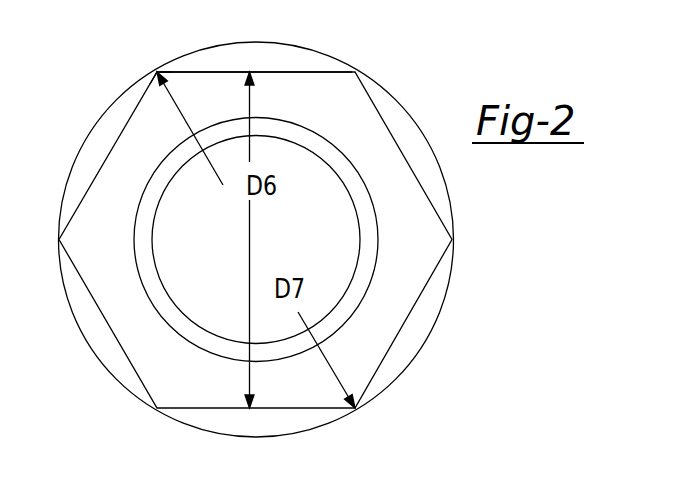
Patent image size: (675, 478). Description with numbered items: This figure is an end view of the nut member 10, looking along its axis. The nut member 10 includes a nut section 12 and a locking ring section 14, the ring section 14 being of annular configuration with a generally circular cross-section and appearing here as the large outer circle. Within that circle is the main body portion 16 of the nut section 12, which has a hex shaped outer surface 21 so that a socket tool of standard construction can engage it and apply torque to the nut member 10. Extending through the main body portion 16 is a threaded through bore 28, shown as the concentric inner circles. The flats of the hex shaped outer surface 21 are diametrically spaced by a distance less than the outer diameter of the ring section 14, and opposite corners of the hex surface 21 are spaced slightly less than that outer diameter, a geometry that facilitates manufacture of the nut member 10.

The nut member 10 is at (296, 222).
The nut section 12 is at (422, 267).
The locking ring section 14 is at (107, 122).
The main body portion 16 is at (312, 87).
The hex shaped outer surface 21 is at (135, 108).
The threaded through bore 28 is at (318, 160).